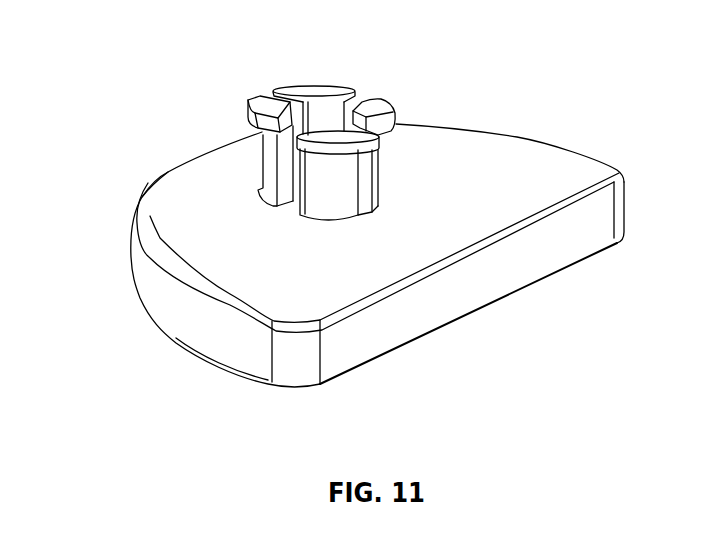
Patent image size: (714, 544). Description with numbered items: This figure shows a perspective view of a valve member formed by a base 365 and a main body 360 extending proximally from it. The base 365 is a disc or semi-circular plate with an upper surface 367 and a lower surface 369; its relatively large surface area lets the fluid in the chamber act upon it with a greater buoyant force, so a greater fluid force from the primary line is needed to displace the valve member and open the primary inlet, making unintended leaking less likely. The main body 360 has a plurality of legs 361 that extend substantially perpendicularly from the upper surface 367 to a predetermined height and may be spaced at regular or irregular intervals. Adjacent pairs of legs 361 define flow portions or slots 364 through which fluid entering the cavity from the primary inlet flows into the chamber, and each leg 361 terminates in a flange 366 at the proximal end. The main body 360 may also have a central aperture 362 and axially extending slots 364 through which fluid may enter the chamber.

The main body 360 is at (311, 123).
The legs 361 is at (262, 186).
The central aperture 362 is at (324, 94).
The slot 364 is at (267, 103).
The base 365 is at (340, 261).
The flange 366 is at (314, 105).
The upper surface 367 is at (158, 233).
The lower surface 369 is at (200, 357).